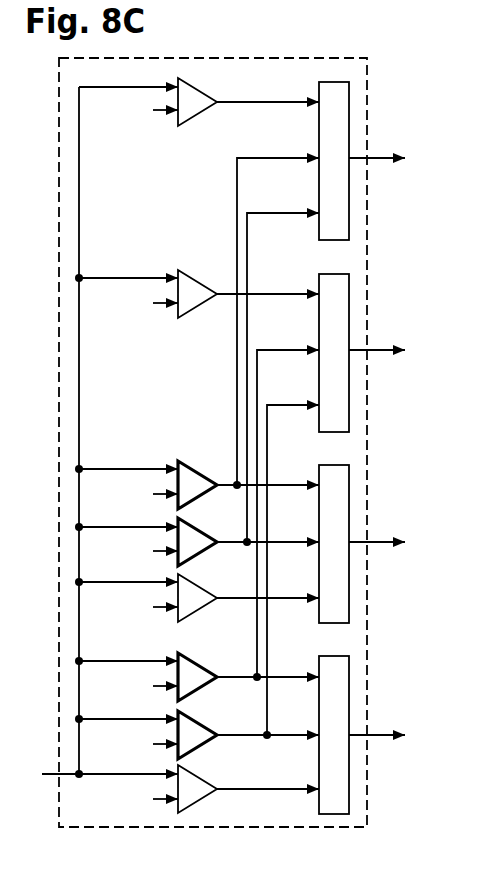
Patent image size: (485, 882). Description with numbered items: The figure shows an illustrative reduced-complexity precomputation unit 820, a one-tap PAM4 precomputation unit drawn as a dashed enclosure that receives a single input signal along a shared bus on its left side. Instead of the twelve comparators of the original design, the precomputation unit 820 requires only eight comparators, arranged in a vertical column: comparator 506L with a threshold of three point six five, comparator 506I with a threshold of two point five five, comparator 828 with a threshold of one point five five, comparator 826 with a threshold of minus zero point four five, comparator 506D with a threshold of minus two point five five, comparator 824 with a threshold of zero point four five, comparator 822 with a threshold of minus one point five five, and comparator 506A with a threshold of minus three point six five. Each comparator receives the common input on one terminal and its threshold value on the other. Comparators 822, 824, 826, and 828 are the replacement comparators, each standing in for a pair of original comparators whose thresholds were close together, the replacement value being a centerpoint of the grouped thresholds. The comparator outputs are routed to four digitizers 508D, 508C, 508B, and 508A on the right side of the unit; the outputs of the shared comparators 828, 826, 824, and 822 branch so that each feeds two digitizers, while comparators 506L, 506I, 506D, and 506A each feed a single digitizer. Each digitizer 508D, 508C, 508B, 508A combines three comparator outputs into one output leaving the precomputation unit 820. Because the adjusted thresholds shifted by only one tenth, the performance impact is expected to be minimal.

The precomputation unit 820 is at (57, 101).
The comparator 506L is at (210, 93).
The comparator 506I is at (210, 285).
The comparator 828 is at (210, 477).
The comparator 826 is at (210, 533).
The comparator 506D is at (210, 589).
The comparator 824 is at (210, 667).
The comparator 822 is at (210, 725).
The comparator 506A is at (210, 781).
The digitizer 508D is at (319, 231).
The digitizer 508C is at (319, 423).
The digitizer 508B is at (319, 614).
The digitizer 508A is at (319, 804).